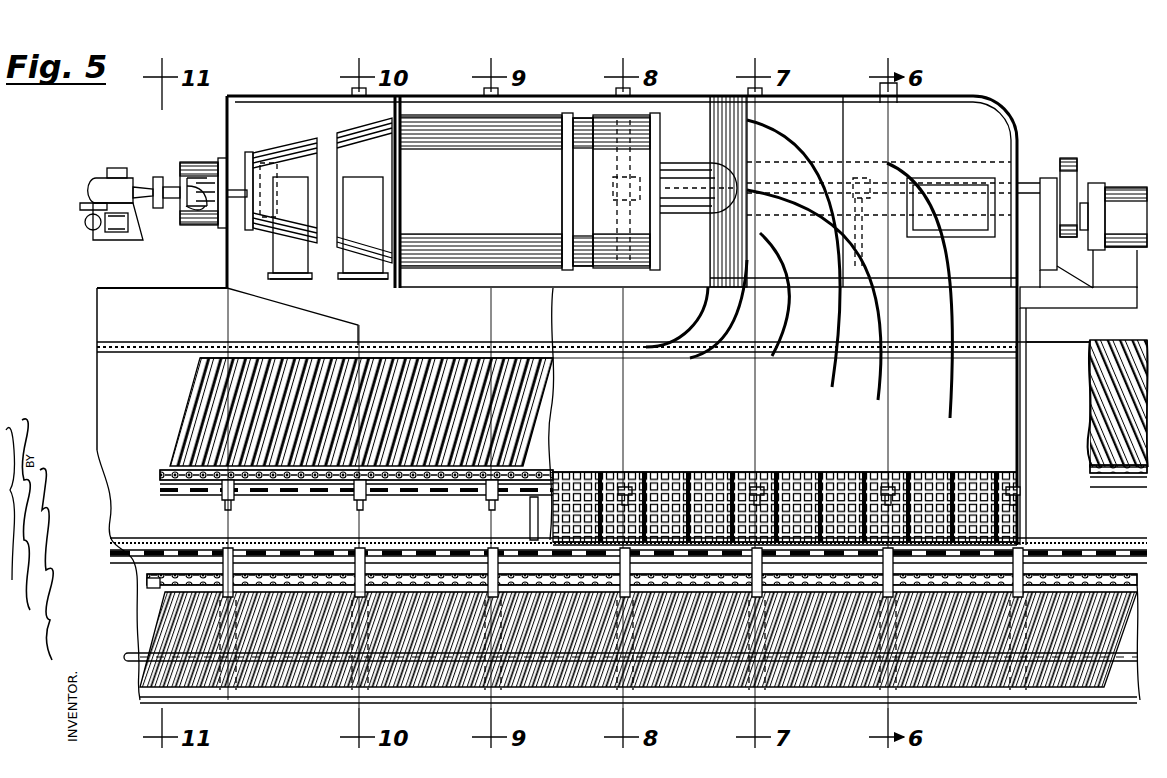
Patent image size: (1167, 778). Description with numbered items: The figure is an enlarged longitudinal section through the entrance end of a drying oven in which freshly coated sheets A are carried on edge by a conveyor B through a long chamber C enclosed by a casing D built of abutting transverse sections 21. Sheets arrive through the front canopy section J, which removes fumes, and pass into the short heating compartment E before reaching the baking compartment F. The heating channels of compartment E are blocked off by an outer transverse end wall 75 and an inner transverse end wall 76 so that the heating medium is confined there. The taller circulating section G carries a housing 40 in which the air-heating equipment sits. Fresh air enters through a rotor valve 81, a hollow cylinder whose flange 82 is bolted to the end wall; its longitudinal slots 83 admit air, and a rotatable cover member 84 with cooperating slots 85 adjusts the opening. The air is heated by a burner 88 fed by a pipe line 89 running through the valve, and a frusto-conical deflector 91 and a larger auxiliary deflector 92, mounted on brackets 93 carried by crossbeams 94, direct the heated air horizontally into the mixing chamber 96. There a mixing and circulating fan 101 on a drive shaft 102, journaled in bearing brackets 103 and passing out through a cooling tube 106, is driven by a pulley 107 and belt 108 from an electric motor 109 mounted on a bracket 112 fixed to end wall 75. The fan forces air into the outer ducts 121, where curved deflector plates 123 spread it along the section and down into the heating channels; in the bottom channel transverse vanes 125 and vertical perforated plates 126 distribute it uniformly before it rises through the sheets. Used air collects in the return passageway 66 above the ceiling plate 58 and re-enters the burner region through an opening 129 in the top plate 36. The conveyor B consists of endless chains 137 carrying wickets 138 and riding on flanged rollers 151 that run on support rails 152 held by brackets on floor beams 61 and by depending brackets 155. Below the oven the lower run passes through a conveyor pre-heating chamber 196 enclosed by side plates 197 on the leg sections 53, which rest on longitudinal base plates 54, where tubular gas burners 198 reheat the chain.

The housing 40 is at (283, 92).
The circulating section G is at (820, 93).
The outer duct 121 is at (962, 107).
The casing D is at (95, 286).
The rotor valve 81 is at (183, 162).
The flange 82 is at (222, 160).
The longitudinal slot 83 is at (200, 163).
The rotatable cover member 84 is at (185, 224).
The cooperating slot 85 is at (200, 224).
The pipe line 89 is at (240, 198).
The burner 88 is at (268, 165).
The frusto-conical deflector 91 is at (300, 150).
The auxiliary deflector 92 is at (350, 135).
The bracket 93 is at (292, 256).
The crossbeam 94 is at (313, 280).
The mixing chamber 96 is at (530, 191).
The mixing and circulating fan 101 is at (612, 140).
The drive shaft 102 is at (683, 182).
The cooling tube 106 is at (683, 215).
The return passageway 66 is at (648, 318).
The top plate 36 is at (643, 288).
The curved deflector plate 123 is at (950, 372).
The bearing bracket 103 is at (1048, 178).
The pulley 107 is at (1079, 164).
The belt 108 is at (1090, 203).
The electric motor 109 is at (1110, 190).
The bracket 112 is at (1078, 416).
The inner transverse end wall 76 is at (368, 523).
The opening 129 is at (390, 300).
The sheet A is at (395, 300).
The ceiling plate 58 is at (590, 352).
The transverse section 21 is at (120, 388).
The chamber C is at (115, 369).
The conveyor B is at (160, 432).
The wicket 138 is at (472, 690).
The support rail 152 is at (150, 585).
The endless chain 137 is at (1085, 500).
The depending bracket 155 is at (1040, 545).
The crossbeam 61 is at (228, 498).
The flanged roller 151 is at (1130, 473).
The transverse vane 125 is at (730, 472).
The vertical perforated plate 126 is at (920, 472).
The baking compartment F is at (156, 522).
The heating compartment E is at (484, 518).
The front canopy section J is at (1058, 364).
The outer transverse end wall 75 is at (1021, 432).
The tubular gas burner 198 is at (130, 659).
The side plate 197 is at (200, 690).
The longitudinal base plate 54 is at (985, 700).
The leg section 53 is at (620, 700).
The conveyor pre-heating chamber 196 is at (661, 691).